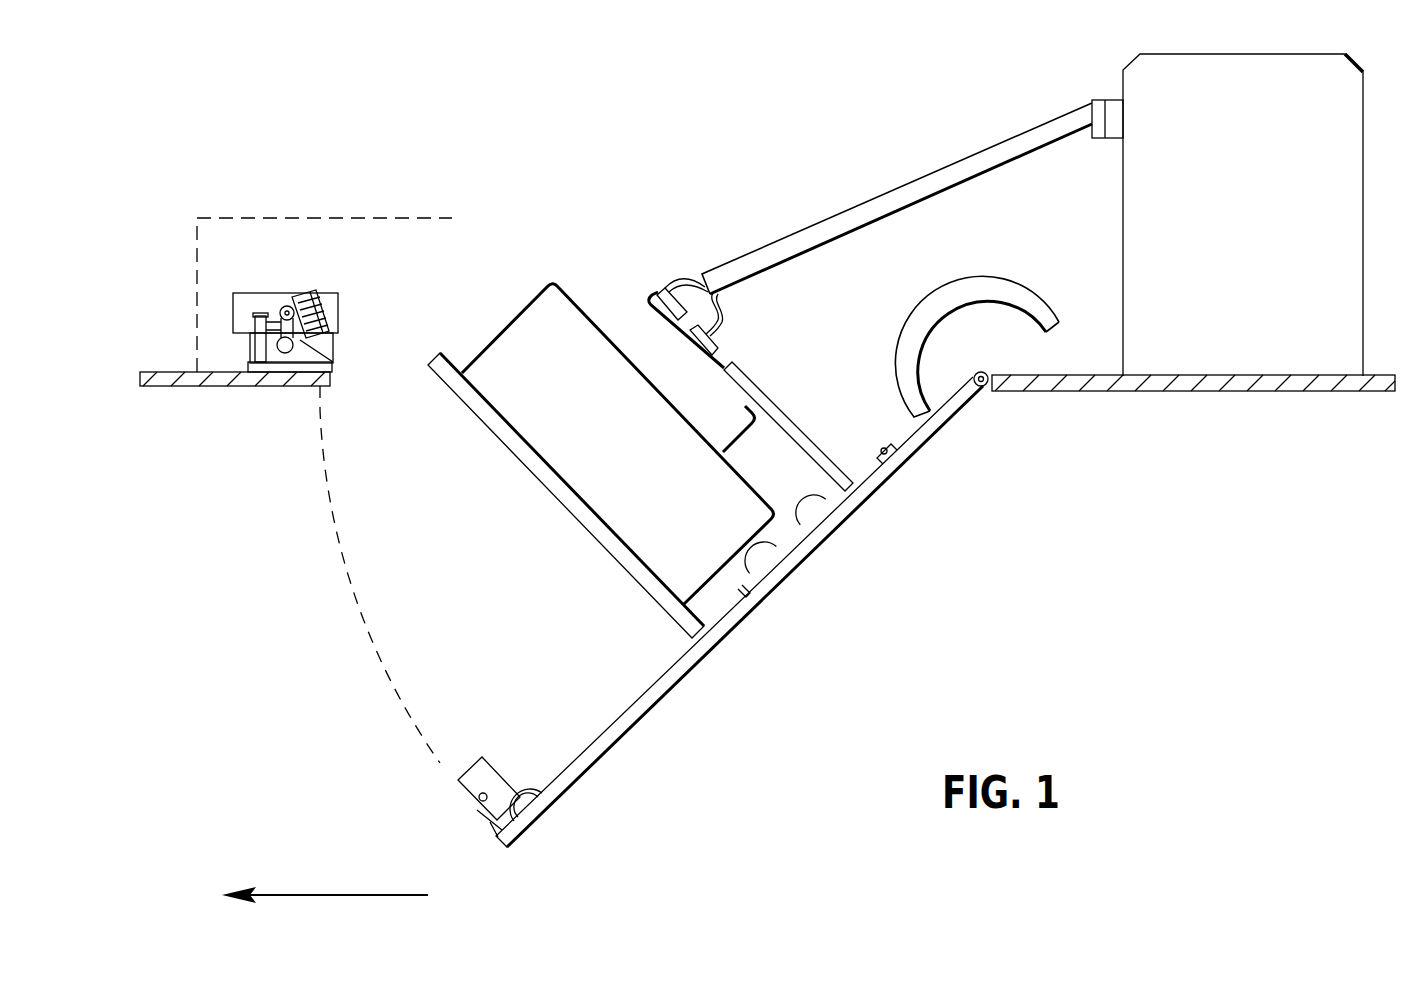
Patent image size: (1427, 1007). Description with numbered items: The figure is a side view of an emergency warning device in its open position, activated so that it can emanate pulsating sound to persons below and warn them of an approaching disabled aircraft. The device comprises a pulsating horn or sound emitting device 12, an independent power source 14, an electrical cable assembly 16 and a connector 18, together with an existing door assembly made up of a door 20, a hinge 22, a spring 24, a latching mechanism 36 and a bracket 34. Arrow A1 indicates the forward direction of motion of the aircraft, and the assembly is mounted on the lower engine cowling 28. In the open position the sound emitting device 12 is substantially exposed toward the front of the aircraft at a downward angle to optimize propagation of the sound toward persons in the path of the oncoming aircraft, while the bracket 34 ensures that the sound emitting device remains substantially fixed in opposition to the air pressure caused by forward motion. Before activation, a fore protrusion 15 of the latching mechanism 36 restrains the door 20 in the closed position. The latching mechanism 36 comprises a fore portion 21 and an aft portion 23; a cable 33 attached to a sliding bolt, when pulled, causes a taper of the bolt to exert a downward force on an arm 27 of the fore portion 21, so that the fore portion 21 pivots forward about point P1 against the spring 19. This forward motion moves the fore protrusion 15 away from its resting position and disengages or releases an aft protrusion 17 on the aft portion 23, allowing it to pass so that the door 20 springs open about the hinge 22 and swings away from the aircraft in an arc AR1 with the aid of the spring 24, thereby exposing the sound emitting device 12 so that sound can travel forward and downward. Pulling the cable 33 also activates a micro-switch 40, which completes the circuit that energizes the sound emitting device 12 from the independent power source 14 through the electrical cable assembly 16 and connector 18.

The sound emitting device 12 is at (552, 506).
The independent power source 14 is at (1118, 200).
The fore protrusion 15 is at (330, 298).
The electrical cable assembly 16 is at (948, 162).
The aft protrusion 17 is at (476, 806).
The connector 18 is at (1095, 93).
The spring 19 is at (338, 323).
The door 20 is at (687, 678).
The fore portion 21 is at (298, 290).
The hinge 22 is at (993, 392).
The aft portion 23 is at (500, 755).
The spring 24 is at (905, 325).
The arm 27 is at (285, 360).
The lower engine cowling 28 is at (1272, 398).
The cable 33 is at (283, 300).
The bracket 34 is at (838, 526).
The latching mechanism 36 is at (331, 212).
The micro-switch 40 is at (228, 325).
The pivot point P1 is at (330, 343).
The arc AR1 is at (368, 633).
The arrow indicating forward direction A1 is at (325, 878).